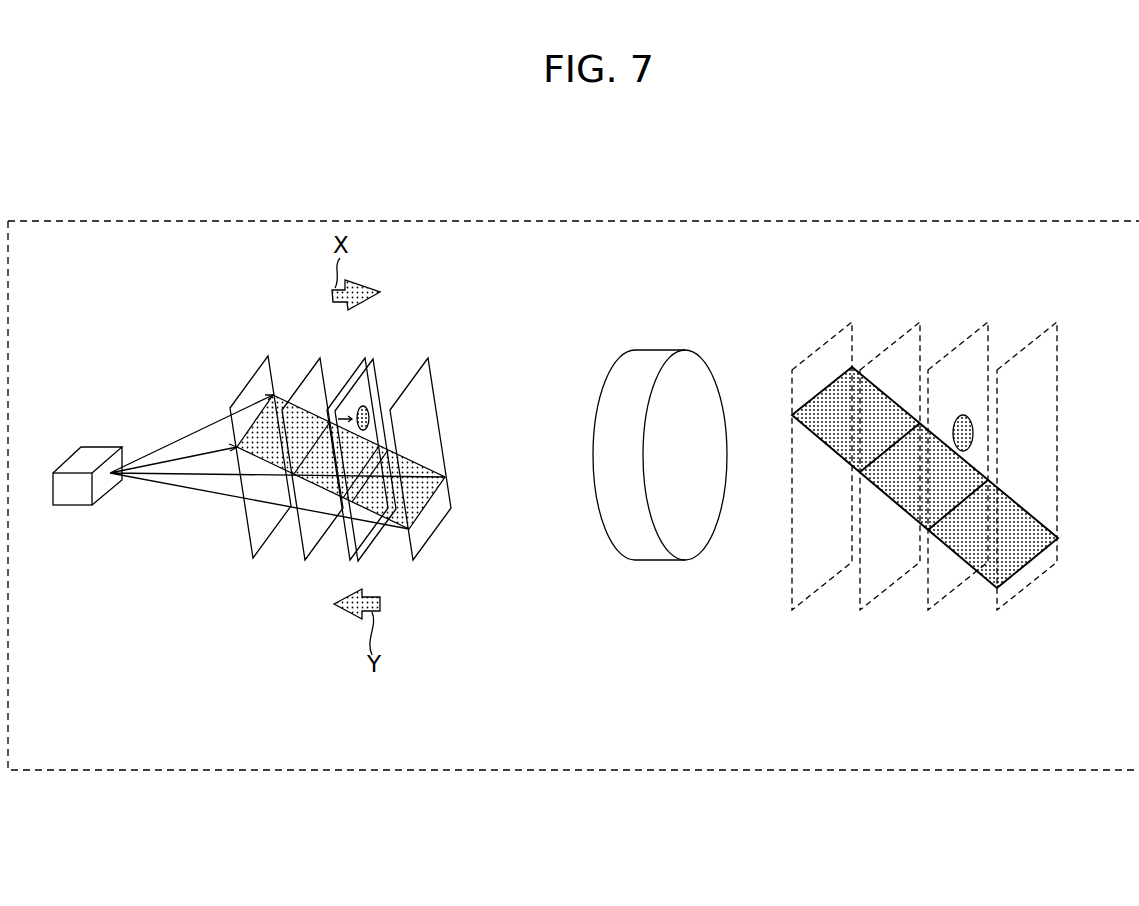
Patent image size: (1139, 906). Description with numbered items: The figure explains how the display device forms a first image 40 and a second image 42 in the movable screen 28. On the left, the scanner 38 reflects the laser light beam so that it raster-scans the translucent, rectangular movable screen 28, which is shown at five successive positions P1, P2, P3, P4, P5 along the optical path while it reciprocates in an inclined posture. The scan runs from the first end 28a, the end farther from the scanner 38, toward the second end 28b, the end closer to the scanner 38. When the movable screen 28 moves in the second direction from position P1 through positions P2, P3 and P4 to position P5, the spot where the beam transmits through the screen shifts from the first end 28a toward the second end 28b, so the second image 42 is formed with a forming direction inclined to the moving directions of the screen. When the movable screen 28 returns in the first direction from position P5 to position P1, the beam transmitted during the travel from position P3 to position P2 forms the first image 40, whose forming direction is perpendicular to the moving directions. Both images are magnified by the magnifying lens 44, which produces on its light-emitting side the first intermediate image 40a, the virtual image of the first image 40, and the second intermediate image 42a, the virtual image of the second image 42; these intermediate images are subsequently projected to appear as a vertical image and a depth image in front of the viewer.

The scanner 38 is at (82, 457).
The movable screen 28 is at (373, 359).
The first end 28a is at (435, 513).
The second end 28b is at (418, 380).
The first image 40 is at (366, 405).
The second image 42 is at (418, 467).
The magnifying lens 44 is at (637, 547).
The first intermediate image 40a is at (963, 413).
The second intermediate image 42a is at (1032, 530).
The position P1 is at (428, 532).
The position P2 is at (370, 537).
The position P3 is at (348, 545).
The position P4 is at (312, 562).
The position P5 is at (258, 562).